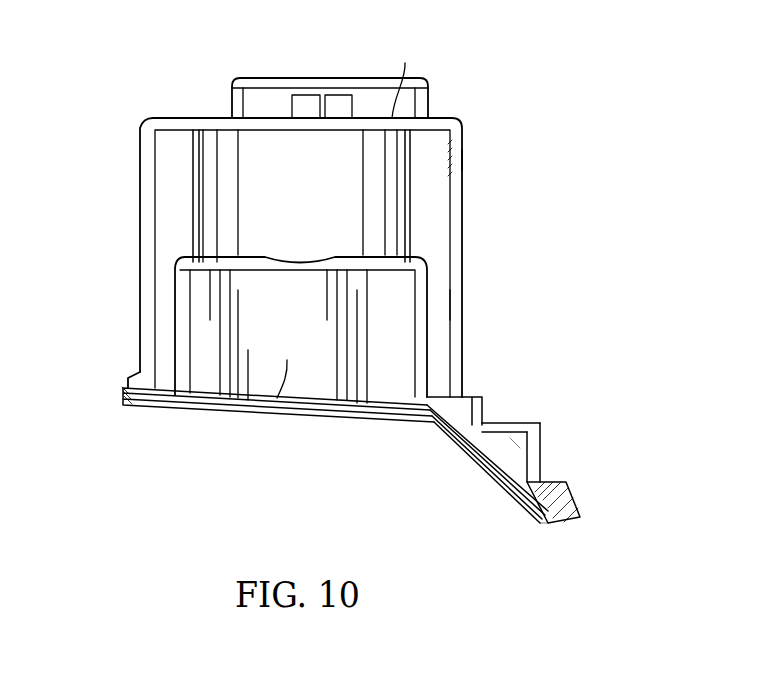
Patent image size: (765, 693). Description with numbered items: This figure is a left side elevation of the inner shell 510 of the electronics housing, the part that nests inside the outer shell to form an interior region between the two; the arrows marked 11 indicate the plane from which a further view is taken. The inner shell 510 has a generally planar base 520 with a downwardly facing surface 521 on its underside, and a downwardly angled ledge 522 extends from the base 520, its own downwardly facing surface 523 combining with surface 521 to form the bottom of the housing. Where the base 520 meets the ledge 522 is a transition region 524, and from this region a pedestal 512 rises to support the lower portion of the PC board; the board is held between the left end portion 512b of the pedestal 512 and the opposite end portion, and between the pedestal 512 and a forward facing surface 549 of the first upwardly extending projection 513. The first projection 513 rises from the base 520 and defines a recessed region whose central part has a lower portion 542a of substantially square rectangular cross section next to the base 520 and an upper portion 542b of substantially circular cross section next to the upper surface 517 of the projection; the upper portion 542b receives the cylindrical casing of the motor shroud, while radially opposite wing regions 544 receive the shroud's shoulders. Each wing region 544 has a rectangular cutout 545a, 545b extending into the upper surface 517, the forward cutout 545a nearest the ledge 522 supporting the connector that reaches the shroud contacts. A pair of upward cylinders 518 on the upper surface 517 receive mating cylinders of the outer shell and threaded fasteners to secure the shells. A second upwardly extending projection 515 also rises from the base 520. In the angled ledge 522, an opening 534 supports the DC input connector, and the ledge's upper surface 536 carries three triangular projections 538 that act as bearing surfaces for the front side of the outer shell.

The section line 11- 11 is at (322, 65).
The inner shell 510 is at (565, 53).
The pedestal 512 is at (482, 407).
The left end portion of the pedestal 512b is at (442, 428).
The first upwardly extending projection 513 is at (337, 217).
The second upwardly extending projection 515 is at (270, 98).
The upper surface of the first projection 517 is at (405, 80).
The upward cylinders 518 is at (340, 100).
The base 520 is at (188, 407).
The downwardly facing surface of the base 521 is at (350, 422).
The downwardly angled ledge 522 is at (518, 437).
The downwardly facing surface of the ledge 523 is at (535, 500).
The transition region 524 is at (445, 428).
The opening 534 is at (528, 408).
The upper surface of the angled ledge 536 is at (533, 425).
The triangular projections 538 is at (573, 500).
The lower portion of the central region 542a is at (277, 398).
The upper portion of the central region 542b is at (283, 205).
The wing regions 544 is at (170, 200).
The forward rectangular cutout 545a is at (483, 160).
The rectangular cutout 545b is at (128, 157).
The forward facing surface of the first projection 549 is at (462, 300).